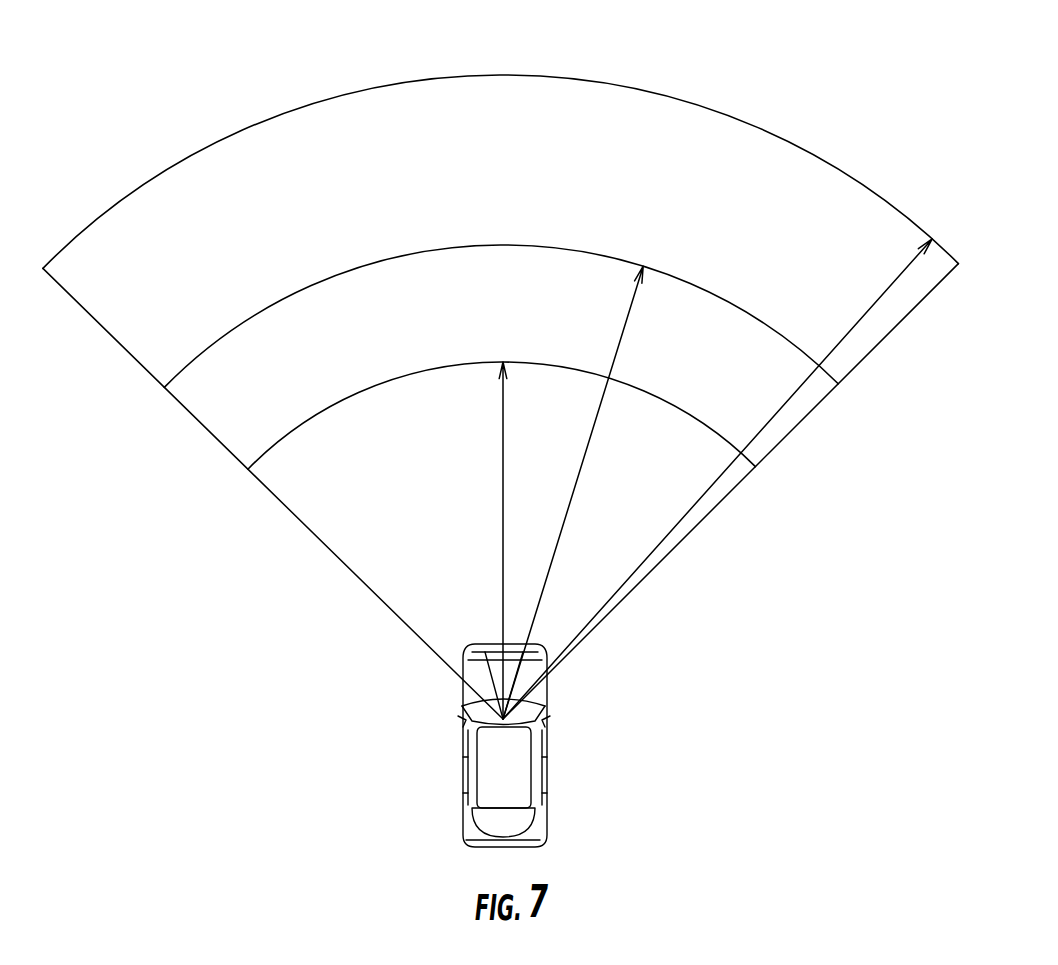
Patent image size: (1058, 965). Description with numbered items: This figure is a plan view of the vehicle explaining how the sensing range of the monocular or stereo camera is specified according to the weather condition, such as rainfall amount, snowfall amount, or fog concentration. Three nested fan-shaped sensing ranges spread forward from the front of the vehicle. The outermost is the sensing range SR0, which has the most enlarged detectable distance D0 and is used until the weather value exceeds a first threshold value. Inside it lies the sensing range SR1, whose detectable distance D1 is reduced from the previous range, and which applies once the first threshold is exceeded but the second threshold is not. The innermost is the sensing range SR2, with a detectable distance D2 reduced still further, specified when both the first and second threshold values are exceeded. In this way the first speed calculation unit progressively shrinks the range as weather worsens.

The sensing range SR0 is at (490, 128).
The sensing range SR1 is at (222, 407).
The sensing range SR2 is at (348, 527).
The detectable distance D0 is at (848, 335).
The detectable distance D1 is at (568, 517).
The detectable distance D2 is at (502, 577).